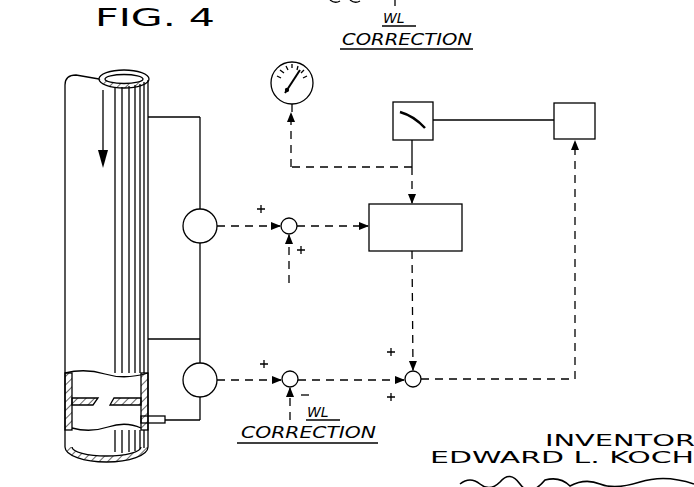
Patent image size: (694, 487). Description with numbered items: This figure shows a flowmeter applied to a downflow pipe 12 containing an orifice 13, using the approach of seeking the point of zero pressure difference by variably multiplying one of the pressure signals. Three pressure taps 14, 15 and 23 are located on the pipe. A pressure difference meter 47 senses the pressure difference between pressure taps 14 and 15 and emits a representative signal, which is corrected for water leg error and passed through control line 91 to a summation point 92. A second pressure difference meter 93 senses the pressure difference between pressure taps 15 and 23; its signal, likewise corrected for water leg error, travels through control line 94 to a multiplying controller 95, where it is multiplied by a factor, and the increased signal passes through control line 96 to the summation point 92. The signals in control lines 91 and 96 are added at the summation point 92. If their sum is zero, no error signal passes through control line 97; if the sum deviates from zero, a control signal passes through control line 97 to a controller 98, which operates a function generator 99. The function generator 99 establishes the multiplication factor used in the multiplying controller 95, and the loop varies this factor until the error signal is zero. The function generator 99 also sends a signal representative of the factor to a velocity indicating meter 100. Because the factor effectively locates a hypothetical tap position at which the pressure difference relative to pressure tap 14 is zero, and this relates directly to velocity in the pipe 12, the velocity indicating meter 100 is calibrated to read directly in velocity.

The downflow pipe 12 is at (64, 174).
The orifice 13 is at (87, 396).
The pressure tap 14 is at (154, 425).
The pressure tap 15 is at (163, 338).
The pressure tap 23 is at (195, 116).
The pressure difference meter 47 is at (210, 366).
The control line 91 is at (326, 378).
The summation point 92 is at (418, 386).
The pressure difference meter 93 is at (205, 211).
The control line 94 is at (324, 226).
The multiplying controller 95 is at (440, 210).
The control line 96 is at (416, 306).
The control line 97 is at (577, 300).
The controller 98 is at (593, 118).
The function generator 99 is at (425, 108).
The velocity indicating meter 100 is at (308, 30).